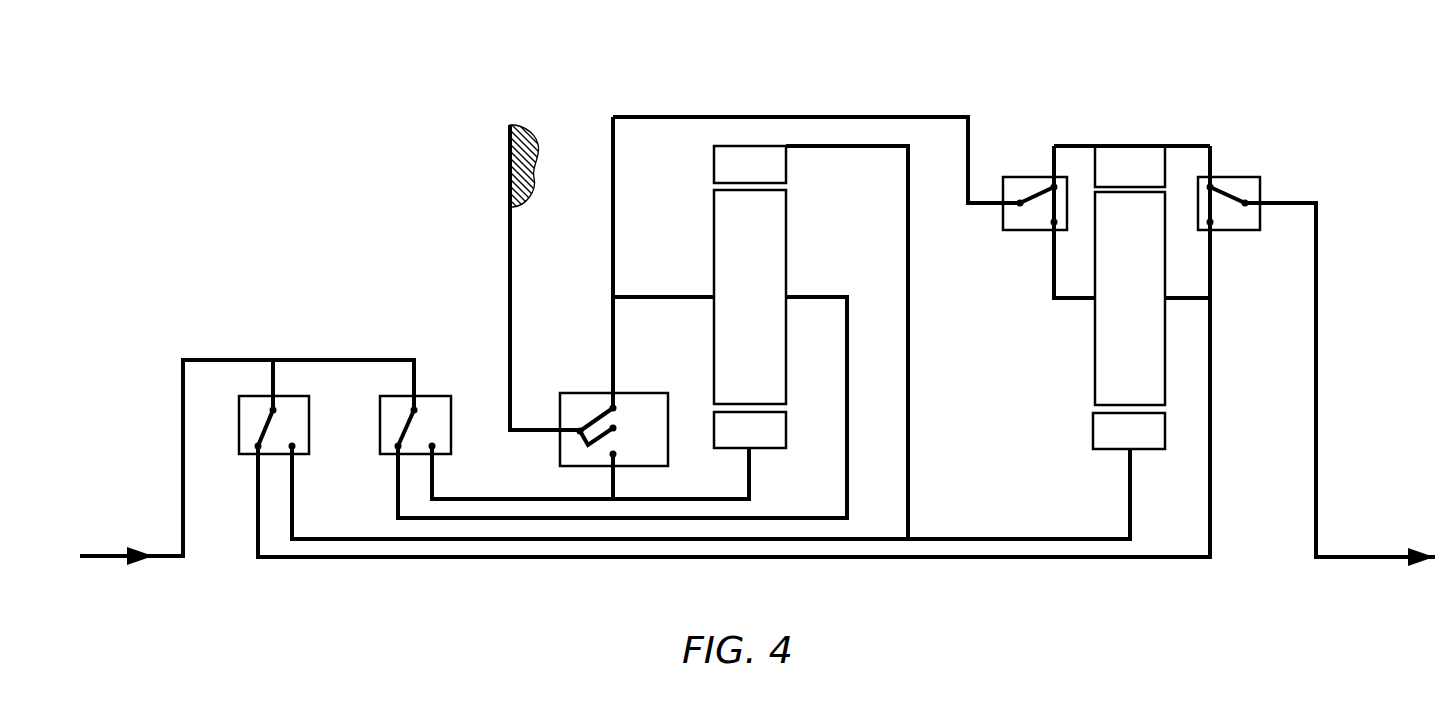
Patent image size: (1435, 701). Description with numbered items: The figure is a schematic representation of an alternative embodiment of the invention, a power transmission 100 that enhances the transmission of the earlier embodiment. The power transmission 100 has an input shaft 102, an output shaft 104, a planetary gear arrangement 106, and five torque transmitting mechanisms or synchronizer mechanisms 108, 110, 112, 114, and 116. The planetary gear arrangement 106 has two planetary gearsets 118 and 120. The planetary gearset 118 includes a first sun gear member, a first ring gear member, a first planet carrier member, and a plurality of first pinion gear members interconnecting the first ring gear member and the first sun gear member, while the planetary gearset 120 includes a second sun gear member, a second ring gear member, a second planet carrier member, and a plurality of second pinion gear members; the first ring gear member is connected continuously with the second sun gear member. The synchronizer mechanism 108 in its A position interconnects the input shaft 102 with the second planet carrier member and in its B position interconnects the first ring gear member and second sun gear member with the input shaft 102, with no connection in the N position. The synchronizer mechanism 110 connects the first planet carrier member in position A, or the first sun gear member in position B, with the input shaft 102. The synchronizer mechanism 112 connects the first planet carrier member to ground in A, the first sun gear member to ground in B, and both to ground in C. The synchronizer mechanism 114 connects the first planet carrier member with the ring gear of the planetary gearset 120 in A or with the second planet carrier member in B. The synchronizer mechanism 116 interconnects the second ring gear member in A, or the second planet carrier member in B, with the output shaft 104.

The power transmission 100 is at (480, 222).
The input shaft 102 is at (167, 553).
The output shaft 104 is at (1349, 556).
The planetary gear arrangement 106 is at (1105, 97).
The synchronizer mechanism 108 is at (297, 394).
The synchronizer mechanism 110 is at (438, 394).
The synchronizer mechanism 112 is at (576, 391).
The synchronizer mechanism 114 is at (1013, 174).
The synchronizer mechanism 116 is at (1241, 174).
The planetary gearset 118 is at (765, 144).
The planetary gearset 120 is at (1148, 144).